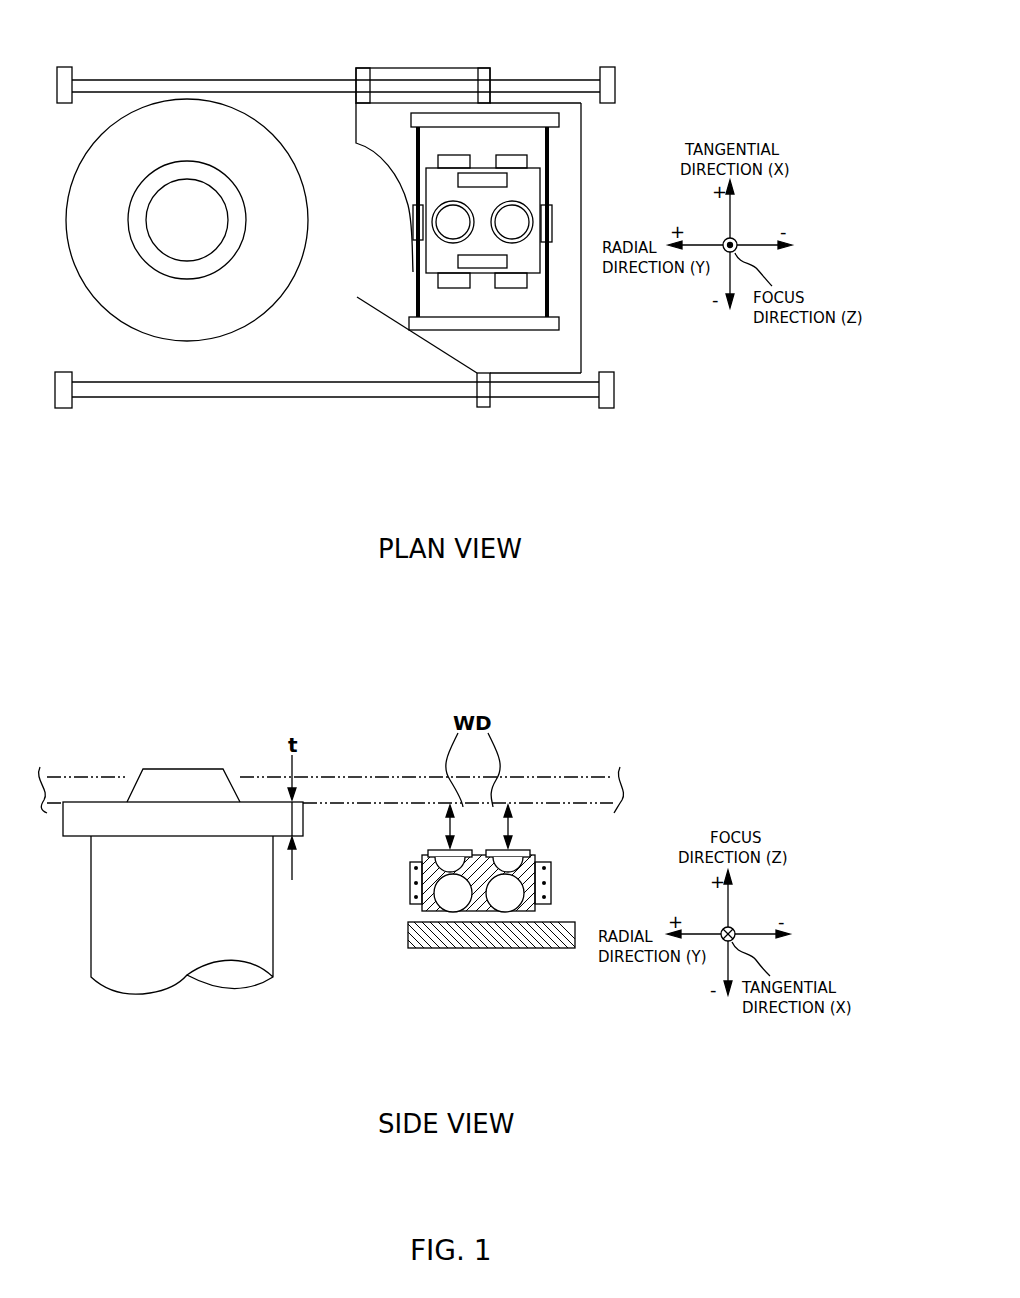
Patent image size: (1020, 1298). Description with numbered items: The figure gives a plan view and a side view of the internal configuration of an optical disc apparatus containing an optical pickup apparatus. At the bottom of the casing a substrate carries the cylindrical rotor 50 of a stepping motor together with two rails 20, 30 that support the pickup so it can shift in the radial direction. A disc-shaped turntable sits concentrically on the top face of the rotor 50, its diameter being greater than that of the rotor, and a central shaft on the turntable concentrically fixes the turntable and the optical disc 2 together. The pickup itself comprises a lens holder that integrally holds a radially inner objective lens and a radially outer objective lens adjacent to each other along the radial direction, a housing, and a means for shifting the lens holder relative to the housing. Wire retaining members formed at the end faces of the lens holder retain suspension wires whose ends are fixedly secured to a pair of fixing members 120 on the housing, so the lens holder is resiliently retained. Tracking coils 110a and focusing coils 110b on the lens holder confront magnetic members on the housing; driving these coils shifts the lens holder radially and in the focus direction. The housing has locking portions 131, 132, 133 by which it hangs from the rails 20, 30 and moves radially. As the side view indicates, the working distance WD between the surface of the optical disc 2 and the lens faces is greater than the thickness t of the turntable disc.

The optical disc 2 is at (270, 775).
The rail 20 is at (200, 398).
The rail 30 is at (206, 80).
The rotor 50 is at (194, 914).
The tracking coil 110a is at (420, 167).
The focusing coil 110b is at (483, 170).
The fixing member 120 is at (537, 113).
The locking portion 131 is at (485, 407).
The locking portion 132 is at (365, 68).
The locking portion 133 is at (485, 68).